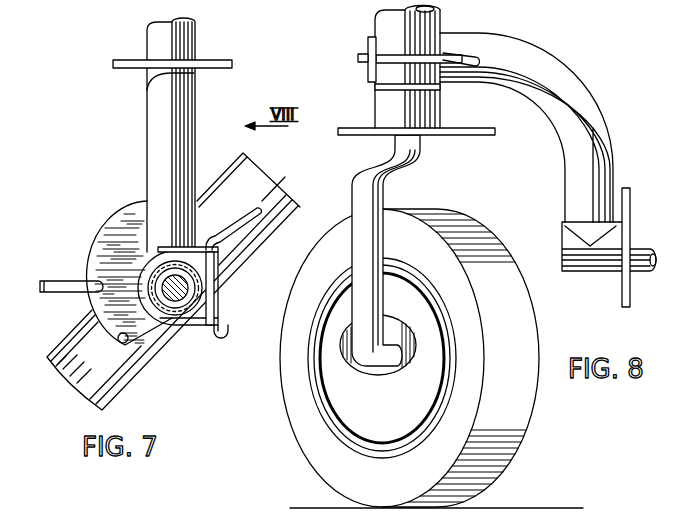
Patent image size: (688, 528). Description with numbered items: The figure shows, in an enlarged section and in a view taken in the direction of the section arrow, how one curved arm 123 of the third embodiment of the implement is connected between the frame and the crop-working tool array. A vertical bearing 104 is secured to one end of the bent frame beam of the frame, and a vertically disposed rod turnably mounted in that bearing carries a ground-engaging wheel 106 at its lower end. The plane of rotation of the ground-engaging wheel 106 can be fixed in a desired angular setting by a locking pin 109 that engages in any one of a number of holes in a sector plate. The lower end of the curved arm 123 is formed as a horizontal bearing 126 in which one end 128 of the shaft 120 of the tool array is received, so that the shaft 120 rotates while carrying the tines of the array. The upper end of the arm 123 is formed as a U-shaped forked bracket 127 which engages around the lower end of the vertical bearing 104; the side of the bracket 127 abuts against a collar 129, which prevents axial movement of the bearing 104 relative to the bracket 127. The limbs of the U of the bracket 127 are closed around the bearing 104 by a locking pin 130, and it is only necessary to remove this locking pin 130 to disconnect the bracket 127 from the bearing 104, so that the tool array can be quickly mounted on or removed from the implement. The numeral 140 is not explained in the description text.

In FIG. 7, the vertical bearing 104 is at (205, 294).
In FIG. 8, the vertical bearing 104 is at (383, 22).
In FIG. 7, the ground-engaging wheel 106 is at (143, 372).
In FIG. 8, the ground-engaging wheel 106 is at (494, 466).
In FIG. 7, the locking pin 109 is at (56, 281).
In FIG. 7, the shaft 120 is at (189, 42).
In FIG. 7, the curved arm 123 is at (163, 155).
In FIG. 8, the curved arm 123 is at (557, 72).
In FIG. 8, the horizontal bearing 126 is at (578, 250).
In FIG. 7, the U-shaped forked bracket 127 is at (185, 323).
In FIG. 8, the U-shaped forked bracket 127 is at (438, 34).
In FIG. 8, the end of shaft 128 is at (618, 268).
In FIG. 7, the collar 129 is at (213, 258).
In FIG. 8, the collar 129 is at (376, 87).
In FIG. 7, the locking pin 130 is at (240, 223).
In FIG. 8, the locking pin 130 is at (477, 55).
In FIG. 7, the frame member 140 is at (128, 1).